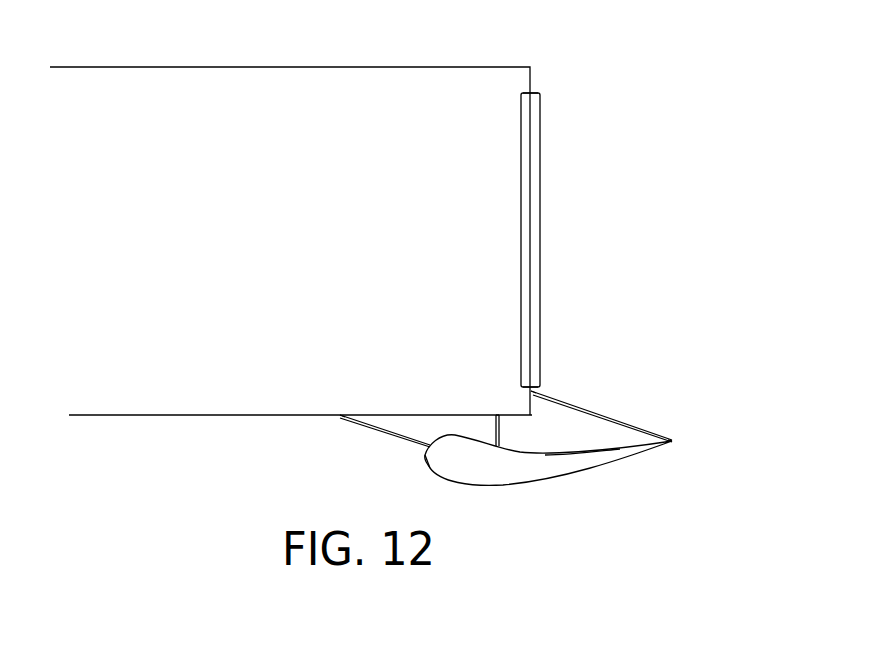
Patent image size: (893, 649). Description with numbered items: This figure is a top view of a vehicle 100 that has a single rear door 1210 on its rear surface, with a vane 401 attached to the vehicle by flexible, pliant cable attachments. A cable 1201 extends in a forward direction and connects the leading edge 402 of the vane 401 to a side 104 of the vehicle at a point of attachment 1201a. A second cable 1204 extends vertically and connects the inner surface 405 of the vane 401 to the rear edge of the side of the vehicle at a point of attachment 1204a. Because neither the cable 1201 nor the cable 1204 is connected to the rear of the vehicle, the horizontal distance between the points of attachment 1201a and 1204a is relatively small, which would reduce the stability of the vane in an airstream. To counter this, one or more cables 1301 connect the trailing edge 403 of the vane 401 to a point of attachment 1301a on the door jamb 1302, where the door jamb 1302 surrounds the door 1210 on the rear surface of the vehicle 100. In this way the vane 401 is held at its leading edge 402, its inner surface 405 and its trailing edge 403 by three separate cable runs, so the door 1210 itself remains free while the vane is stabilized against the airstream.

The vehicle 100 is at (188, 95).
The side of the vehicle 104 is at (145, 415).
The door 1210 is at (540, 215).
The door jamb 1302 is at (550, 93).
The cable 1301 is at (625, 423).
The point of attachment 1301a is at (530, 397).
The trailing edge 403 is at (672, 441).
The cable 1201 is at (397, 430).
The point of attachment 1201a is at (340, 415).
The cable 1204 is at (493, 426).
The point of attachment 1204a is at (498, 437).
The vane 401 is at (547, 477).
The leading edge 402 is at (420, 462).
The inner surface 405 is at (560, 453).